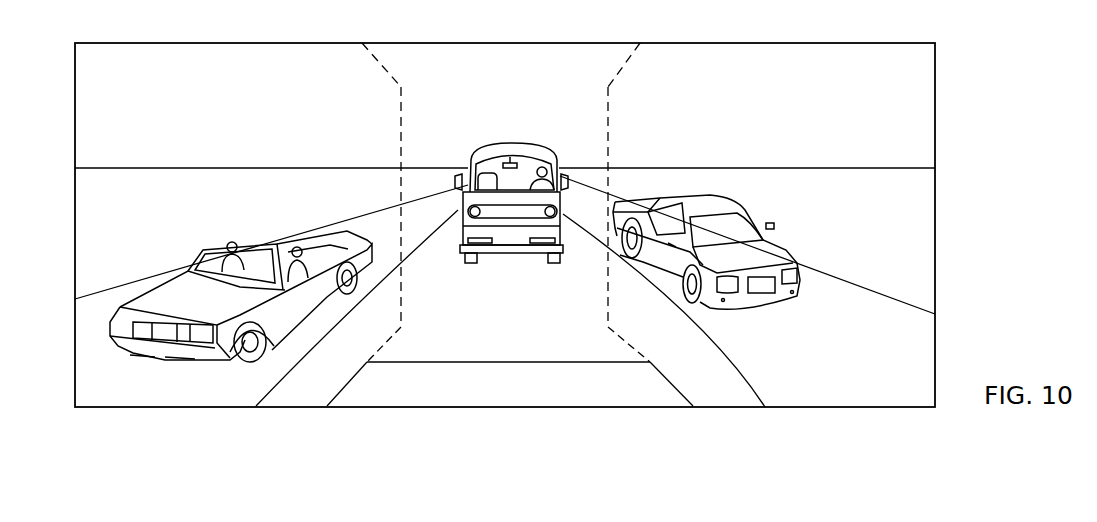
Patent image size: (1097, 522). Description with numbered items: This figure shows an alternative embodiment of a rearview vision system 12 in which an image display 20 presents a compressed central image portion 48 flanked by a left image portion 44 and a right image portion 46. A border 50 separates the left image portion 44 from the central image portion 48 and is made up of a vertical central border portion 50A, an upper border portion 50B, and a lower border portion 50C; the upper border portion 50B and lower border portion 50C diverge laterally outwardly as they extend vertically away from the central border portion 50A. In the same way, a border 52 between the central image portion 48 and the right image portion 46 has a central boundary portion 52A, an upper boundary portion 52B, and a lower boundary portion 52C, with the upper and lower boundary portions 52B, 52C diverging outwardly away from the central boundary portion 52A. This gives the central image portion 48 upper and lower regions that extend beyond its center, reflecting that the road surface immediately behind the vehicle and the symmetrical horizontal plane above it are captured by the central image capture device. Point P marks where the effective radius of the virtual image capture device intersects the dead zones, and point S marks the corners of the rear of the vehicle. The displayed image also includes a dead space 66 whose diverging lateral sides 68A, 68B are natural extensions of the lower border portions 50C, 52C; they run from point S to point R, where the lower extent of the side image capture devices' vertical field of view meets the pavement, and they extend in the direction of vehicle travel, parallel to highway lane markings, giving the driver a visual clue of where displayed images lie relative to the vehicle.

The rearview vision system 12 is at (940, 127).
The image display 20 is at (935, 259).
The left image portion 44 is at (224, 114).
The right image portion 46 is at (791, 119).
The compressed central image portion 48 is at (519, 104).
The border 50 is at (404, 121).
The vertical central border portion 50A is at (397, 176).
The upper border portion 50B is at (376, 63).
The lower border portion 50C is at (388, 342).
The border 52 is at (604, 112).
The central boundary portion 52A is at (612, 141).
The upper boundary portion 52B is at (628, 66).
The lower boundary portion 52C is at (625, 343).
The dead space 66 is at (529, 392).
The diverging lateral side 68A is at (350, 380).
The diverging lateral side 68B is at (670, 383).
The point P is at (401, 327).
The point S is at (366, 361).
The point R is at (328, 404).